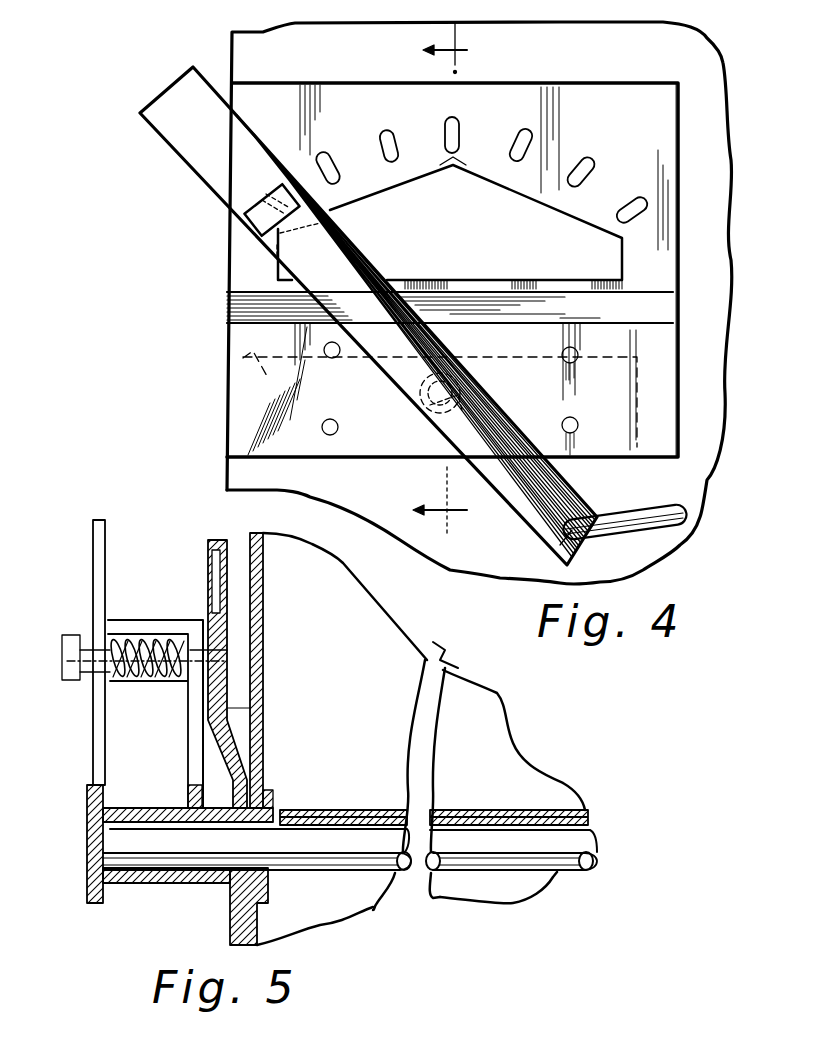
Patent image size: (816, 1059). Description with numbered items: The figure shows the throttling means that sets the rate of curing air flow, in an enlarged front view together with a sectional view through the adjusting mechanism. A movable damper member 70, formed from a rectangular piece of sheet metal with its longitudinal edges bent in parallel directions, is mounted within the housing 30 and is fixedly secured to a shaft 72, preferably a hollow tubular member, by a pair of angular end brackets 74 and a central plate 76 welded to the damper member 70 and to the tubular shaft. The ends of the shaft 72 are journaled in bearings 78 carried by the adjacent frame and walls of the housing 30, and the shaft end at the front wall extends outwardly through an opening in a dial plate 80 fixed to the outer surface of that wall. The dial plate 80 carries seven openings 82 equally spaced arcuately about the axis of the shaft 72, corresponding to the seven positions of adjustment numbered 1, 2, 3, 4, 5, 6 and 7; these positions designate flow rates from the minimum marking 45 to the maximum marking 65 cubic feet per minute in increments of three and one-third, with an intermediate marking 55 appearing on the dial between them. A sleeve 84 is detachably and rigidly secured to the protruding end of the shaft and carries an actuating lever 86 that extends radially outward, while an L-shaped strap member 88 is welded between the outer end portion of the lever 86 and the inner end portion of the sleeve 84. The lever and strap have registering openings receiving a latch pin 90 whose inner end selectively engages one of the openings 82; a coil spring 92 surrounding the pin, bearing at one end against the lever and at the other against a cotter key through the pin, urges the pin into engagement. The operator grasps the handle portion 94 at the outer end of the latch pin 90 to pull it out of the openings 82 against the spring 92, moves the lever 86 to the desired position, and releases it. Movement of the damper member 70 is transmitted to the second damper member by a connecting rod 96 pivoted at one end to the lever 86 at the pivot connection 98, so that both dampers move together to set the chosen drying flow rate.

In FIG. 4, the first position of adjustment 1 is at (270, 201).
In FIG. 4, the second position of adjustment 2 is at (335, 200).
In FIG. 4, the third position of adjustment 3 is at (387, 180).
In FIG. 4, the fourth position of adjustment 4 is at (452, 103).
In FIG. 4, the fifth position of adjustment 5 is at (463, 280).
In FIG. 4, the sixth position of adjustment 6 is at (567, 200).
In FIG. 4, the seventh position of adjustment 7 is at (643, 227).
In FIG. 4, the housing 30 is at (718, 397).
In FIG. 5, the housing 30 is at (263, 662).
In FIG. 4, the minimum flow rate marking 45 is at (298, 239).
In FIG. 4, the apex of guide plate 55 is at (453, 177).
In FIG. 4, the maximum flow rate marking 65 is at (603, 247).
In FIG. 4, the damper member 70 is at (530, 365).
In FIG. 5, the damper member 70 is at (353, 810).
In FIG. 4, the shaft 72 is at (455, 418).
In FIG. 5, the shaft 72 is at (427, 873).
In FIG. 5, the angular end brackets 74 is at (310, 809).
In FIG. 5, the central plate 76 is at (533, 807).
In FIG. 5, the bearings 78 is at (270, 790).
In FIG. 4, the dial plate 80 is at (663, 263).
In FIG. 5, the dial plate 80 is at (214, 707).
In FIG. 4, the openings 82 is at (446, 122).
In FIG. 5, the openings 82 is at (210, 578).
In FIG. 4, the sleeve 84 is at (403, 385).
In FIG. 5, the sleeve 84 is at (140, 887).
In FIG. 4, the actuating lever 86 is at (355, 268).
In FIG. 5, the actuating lever 86 is at (100, 748).
In FIG. 5, the L-shaped strap member 88 is at (203, 618).
In FIG. 5, the latch pin 90 is at (147, 677).
In FIG. 5, the coil spring 92 is at (130, 632).
In FIG. 4, the handle portion 94 is at (230, 217).
In FIG. 5, the handle portion 94 is at (72, 673).
In FIG. 4, the connecting rod 96 is at (687, 520).
In FIG. 4, the pivot connection 98 is at (547, 547).